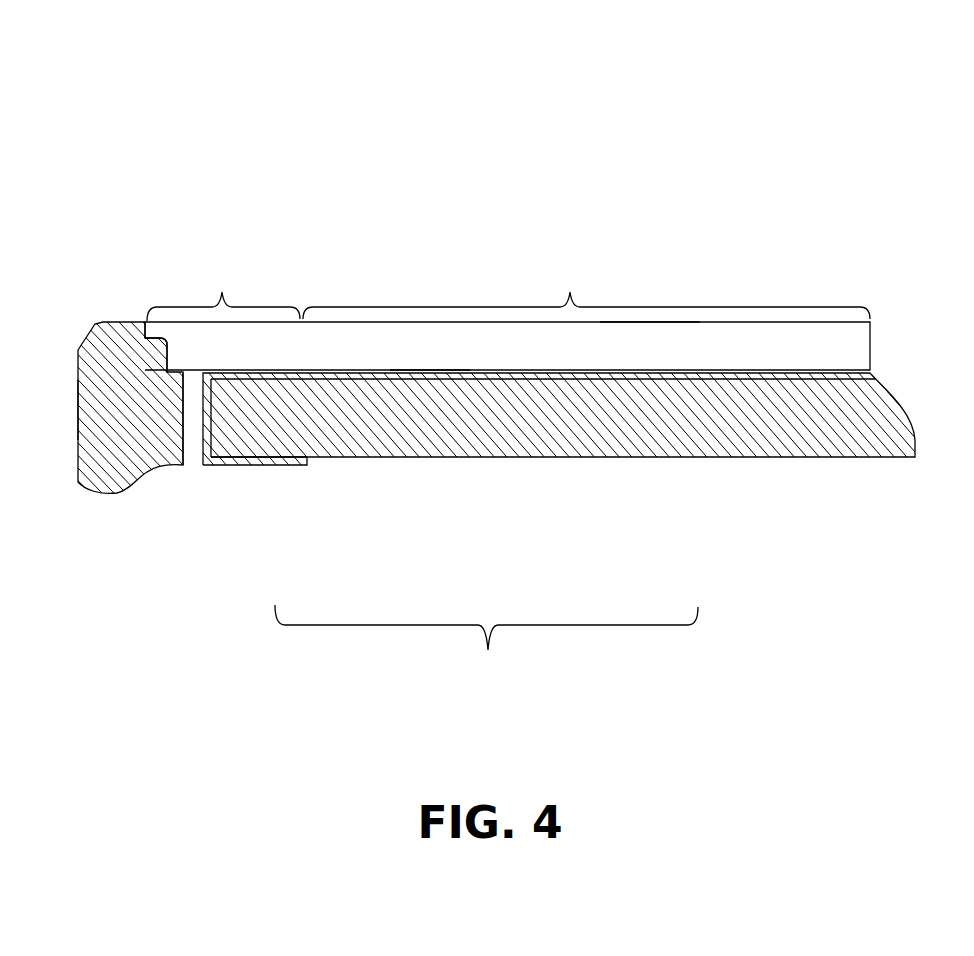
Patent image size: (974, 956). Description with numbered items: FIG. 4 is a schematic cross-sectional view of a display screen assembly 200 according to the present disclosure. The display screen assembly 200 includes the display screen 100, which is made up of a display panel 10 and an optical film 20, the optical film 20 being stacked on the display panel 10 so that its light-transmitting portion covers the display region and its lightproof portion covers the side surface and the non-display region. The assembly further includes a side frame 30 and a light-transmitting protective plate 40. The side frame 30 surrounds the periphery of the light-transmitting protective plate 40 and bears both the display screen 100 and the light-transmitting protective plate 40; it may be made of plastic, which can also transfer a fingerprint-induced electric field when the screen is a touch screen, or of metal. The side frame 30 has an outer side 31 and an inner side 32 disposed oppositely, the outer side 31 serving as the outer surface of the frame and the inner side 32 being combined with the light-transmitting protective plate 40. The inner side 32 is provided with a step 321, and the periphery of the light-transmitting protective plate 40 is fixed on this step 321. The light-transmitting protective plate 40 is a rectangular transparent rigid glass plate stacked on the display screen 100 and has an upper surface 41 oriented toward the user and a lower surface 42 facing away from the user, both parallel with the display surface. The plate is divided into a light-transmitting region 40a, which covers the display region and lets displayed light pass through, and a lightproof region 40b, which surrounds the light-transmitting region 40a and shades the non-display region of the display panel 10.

The display screen assembly 200 is at (675, 110).
The display screen 100 is at (486, 646).
The display panel 10 is at (710, 460).
The optical film 20 is at (265, 465).
The side frame 30 is at (140, 470).
The outer side 31 is at (78, 407).
The inner side 32 is at (192, 372).
The step 321 is at (143, 363).
The light-transmitting protective plate 40 is at (843, 352).
The light-transmitting region 40a is at (586, 292).
The lightproof region 40b is at (223, 293).
The upper surface 41 is at (627, 322).
The lower surface 42 is at (413, 370).